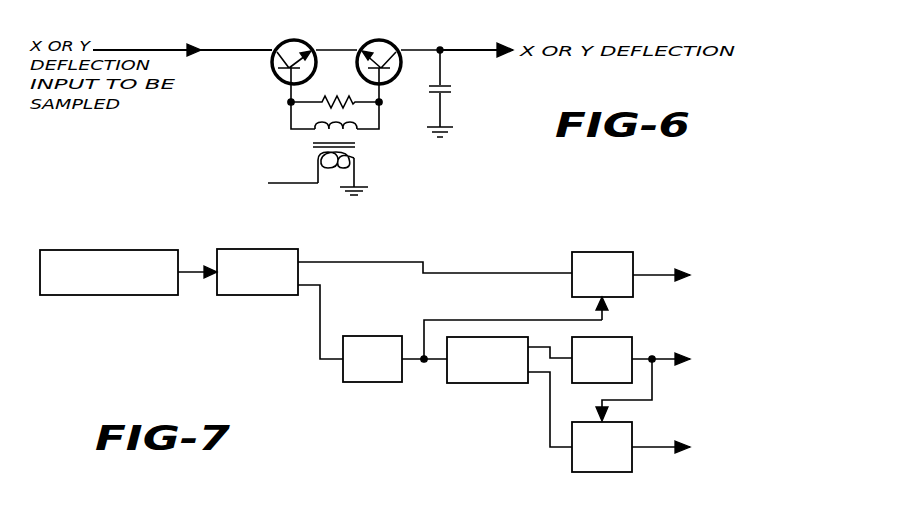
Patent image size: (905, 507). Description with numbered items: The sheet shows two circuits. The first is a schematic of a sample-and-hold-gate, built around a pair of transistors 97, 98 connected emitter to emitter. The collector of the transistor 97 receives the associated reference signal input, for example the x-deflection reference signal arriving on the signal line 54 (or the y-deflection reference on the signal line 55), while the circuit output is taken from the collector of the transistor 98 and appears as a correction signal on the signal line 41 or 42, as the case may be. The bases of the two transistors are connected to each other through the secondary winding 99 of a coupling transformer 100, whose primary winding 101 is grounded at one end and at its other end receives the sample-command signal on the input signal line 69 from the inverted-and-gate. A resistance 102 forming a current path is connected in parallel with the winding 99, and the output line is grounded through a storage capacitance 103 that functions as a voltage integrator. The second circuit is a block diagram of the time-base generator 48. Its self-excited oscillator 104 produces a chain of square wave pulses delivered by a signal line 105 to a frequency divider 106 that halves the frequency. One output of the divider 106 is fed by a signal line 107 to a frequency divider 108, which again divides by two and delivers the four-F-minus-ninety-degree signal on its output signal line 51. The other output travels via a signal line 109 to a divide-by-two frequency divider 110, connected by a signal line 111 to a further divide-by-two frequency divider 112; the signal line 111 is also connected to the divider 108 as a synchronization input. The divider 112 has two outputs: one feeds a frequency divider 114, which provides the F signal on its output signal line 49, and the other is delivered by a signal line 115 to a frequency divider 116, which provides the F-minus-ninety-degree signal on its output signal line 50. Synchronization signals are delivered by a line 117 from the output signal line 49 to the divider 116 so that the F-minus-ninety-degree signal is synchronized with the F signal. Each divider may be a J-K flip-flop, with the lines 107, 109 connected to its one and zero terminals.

In FIG. 6, the signal line 54 is at (182, 34).
In FIG. 6, the signal line 55 is at (230, 31).
In FIG. 6, the transistor 97 is at (273, 79).
In FIG. 6, the transistor 98 is at (370, 46).
In FIG. 6, the signal line 41 is at (478, 36).
In FIG. 6, the signal line 42 is at (479, 33).
In FIG. 6, the storage capacitance 103 is at (448, 96).
In FIG. 6, the resistance 102 is at (322, 106).
In FIG. 6, the secondary winding 99 is at (316, 134).
In FIG. 6, the coupling transformer 100 is at (360, 146).
In FIG. 6, the primary winding 101 is at (355, 166).
In FIG. 6, the input signal line 69 is at (287, 185).
In FIG. 7, the oscillator 104 is at (80, 225).
In FIG. 7, the signal line 105 is at (191, 270).
In FIG. 7, the frequency divider 106 is at (255, 295).
In FIG. 7, the time-base generator 48 is at (380, 249).
In FIG. 7, the signal line 107 is at (518, 243).
In FIG. 7, the signal line 109 is at (320, 325).
In FIG. 7, the frequency divider 110 is at (357, 378).
In FIG. 7, the signal line 111 is at (412, 362).
In FIG. 7, the frequency divider 112 is at (463, 383).
In FIG. 7, the frequency divider 108 is at (620, 226).
In FIG. 7, the output signal line 51 is at (652, 273).
In FIG. 7, the frequency divider 114 is at (617, 337).
In FIG. 7, the output signal line 49 is at (665, 358).
In FIG. 7, the line 117 is at (652, 388).
In FIG. 7, the signal line 115 is at (548, 428).
In FIG. 7, the frequency divider 116 is at (575, 460).
In FIG. 7, the output signal line 50 is at (650, 448).